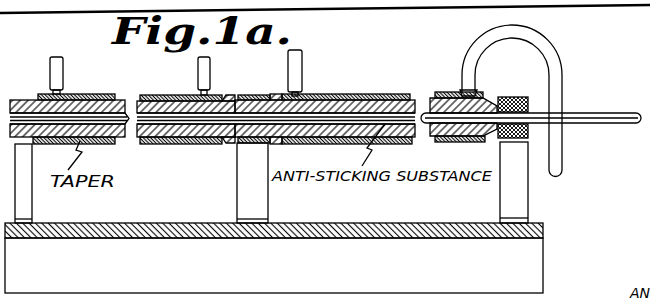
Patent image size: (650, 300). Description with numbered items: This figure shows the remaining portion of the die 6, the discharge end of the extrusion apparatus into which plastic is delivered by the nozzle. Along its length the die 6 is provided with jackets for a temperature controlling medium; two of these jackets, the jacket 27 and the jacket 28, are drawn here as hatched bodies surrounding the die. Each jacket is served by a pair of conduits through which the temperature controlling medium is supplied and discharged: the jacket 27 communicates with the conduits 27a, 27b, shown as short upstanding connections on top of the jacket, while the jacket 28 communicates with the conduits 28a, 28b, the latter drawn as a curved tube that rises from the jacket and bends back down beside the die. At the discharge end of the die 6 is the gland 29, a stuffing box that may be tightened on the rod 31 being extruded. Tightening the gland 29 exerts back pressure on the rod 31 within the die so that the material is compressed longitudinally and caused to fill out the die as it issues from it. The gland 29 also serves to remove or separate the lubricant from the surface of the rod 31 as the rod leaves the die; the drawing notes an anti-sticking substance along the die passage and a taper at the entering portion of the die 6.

The conduit 27a is at (55, 67).
The jacket 27 is at (157, 97).
The conduit 27b is at (209, 68).
The die 6 is at (216, 98).
The conduit 28a is at (302, 68).
The jacket 28 is at (367, 95).
The conduit 28b is at (475, 50).
The gland 29 is at (512, 97).
The rod 31 is at (577, 116).